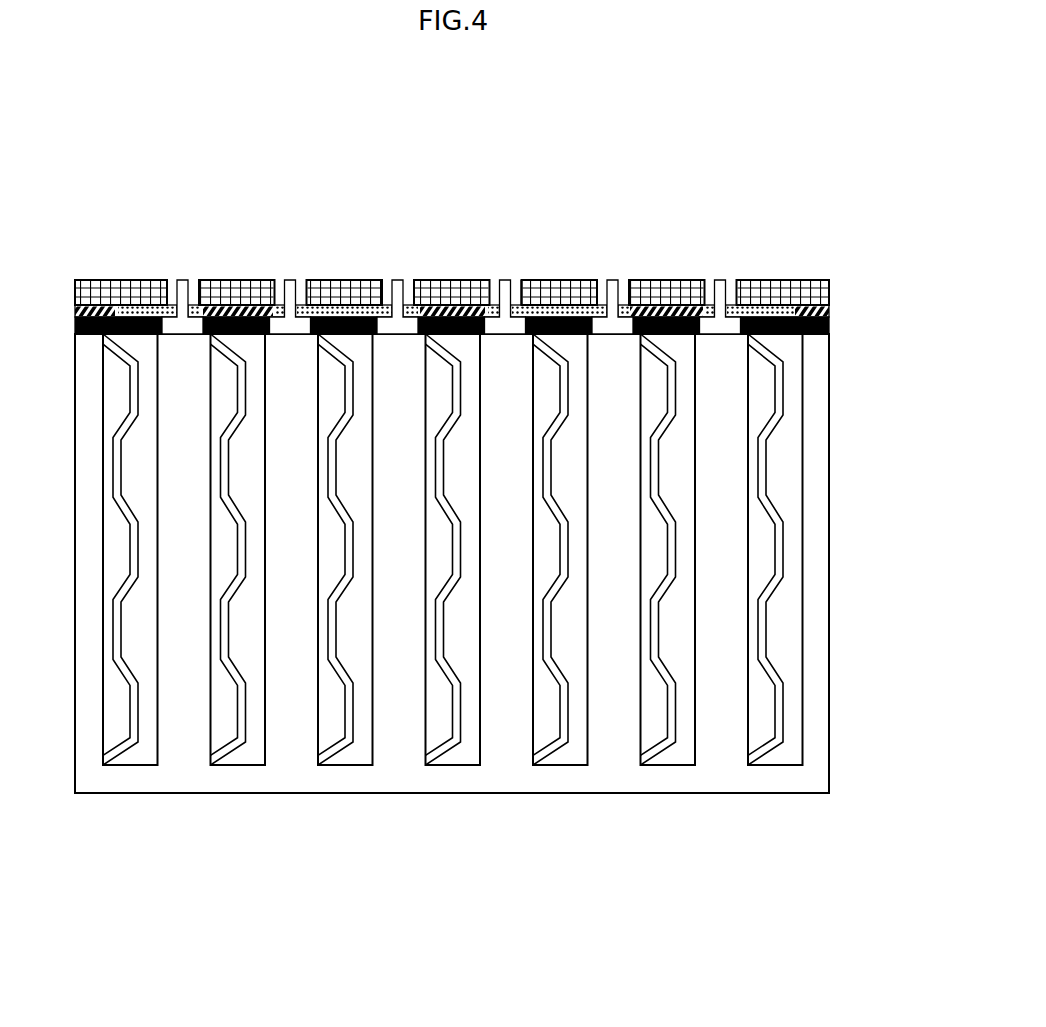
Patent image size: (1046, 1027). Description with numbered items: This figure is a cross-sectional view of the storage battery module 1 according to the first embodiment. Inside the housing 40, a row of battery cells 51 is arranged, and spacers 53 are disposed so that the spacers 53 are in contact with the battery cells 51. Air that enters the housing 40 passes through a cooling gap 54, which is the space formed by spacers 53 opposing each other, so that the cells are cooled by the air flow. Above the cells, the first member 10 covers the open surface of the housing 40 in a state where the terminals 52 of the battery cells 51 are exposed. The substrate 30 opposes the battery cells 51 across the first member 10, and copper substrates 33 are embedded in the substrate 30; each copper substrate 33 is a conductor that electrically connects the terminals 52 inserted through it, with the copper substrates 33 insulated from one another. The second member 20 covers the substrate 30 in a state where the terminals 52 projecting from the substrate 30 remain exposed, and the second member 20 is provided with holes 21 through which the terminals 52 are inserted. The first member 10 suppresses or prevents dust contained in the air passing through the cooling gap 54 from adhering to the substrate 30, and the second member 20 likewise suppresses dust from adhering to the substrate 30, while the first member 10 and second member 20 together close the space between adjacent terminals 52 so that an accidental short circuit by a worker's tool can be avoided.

The storage battery module 1 is at (203, 176).
The first member 10 is at (817, 349).
The second member 20 is at (838, 279).
The hole 21 is at (518, 280).
The substrate 30 is at (70, 306).
The copper substrate 33 is at (322, 298).
The housing 40 is at (773, 782).
The battery cell 51 is at (723, 745).
The terminal 52 is at (721, 297).
The spacer 53 is at (545, 732).
The cooling gap 54 is at (541, 768).